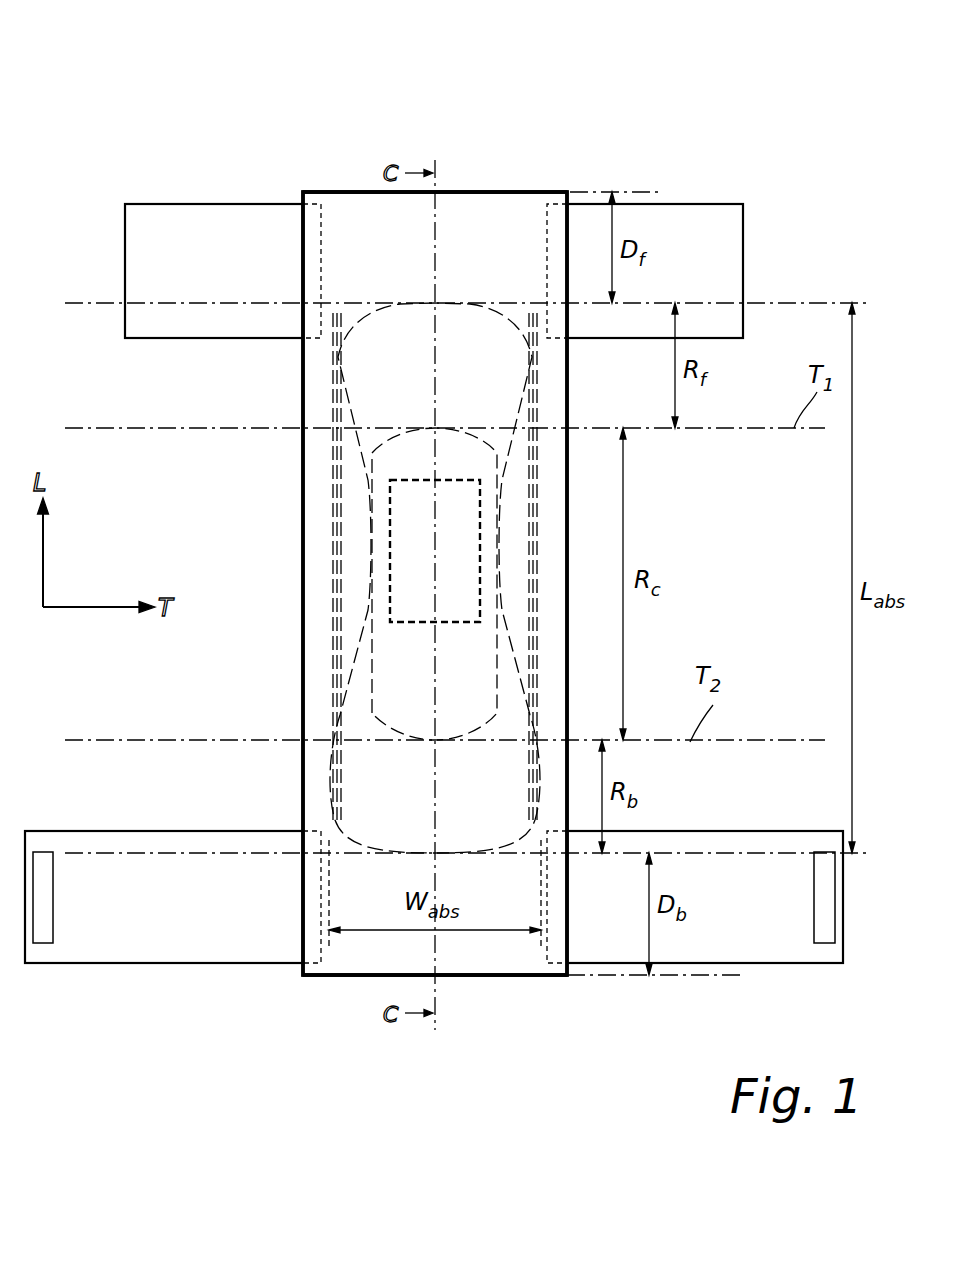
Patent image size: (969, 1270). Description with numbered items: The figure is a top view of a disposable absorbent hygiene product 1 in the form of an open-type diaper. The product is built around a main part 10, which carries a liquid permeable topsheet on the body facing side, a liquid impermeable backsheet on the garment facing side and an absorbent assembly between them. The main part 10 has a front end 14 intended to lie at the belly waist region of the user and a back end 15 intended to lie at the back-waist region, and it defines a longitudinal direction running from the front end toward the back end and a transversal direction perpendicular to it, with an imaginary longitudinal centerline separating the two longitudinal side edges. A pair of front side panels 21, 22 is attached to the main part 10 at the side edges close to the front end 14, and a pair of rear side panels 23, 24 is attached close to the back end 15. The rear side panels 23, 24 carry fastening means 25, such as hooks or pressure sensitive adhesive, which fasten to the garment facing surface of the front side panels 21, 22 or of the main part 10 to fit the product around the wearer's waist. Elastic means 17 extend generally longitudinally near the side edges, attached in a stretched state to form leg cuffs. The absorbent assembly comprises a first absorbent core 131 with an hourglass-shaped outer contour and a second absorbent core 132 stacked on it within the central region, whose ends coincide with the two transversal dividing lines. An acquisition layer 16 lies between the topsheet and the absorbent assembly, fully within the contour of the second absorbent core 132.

The disposable absorbent hygiene product 1 is at (296, 100).
The main part 10 is at (466, 215).
The front end 14 is at (522, 190).
The back end 15 is at (508, 983).
The acquisition layer 16 is at (410, 537).
The elastic means 17 is at (322, 480).
The front side panel 21 is at (193, 228).
The front side panel 22 is at (733, 250).
The rear side panel 23 is at (155, 895).
The rear side panel 24 is at (722, 952).
The fastening means 25 is at (44, 860).
The first absorbent core 131 is at (372, 377).
The second absorbent core 132 is at (412, 663).